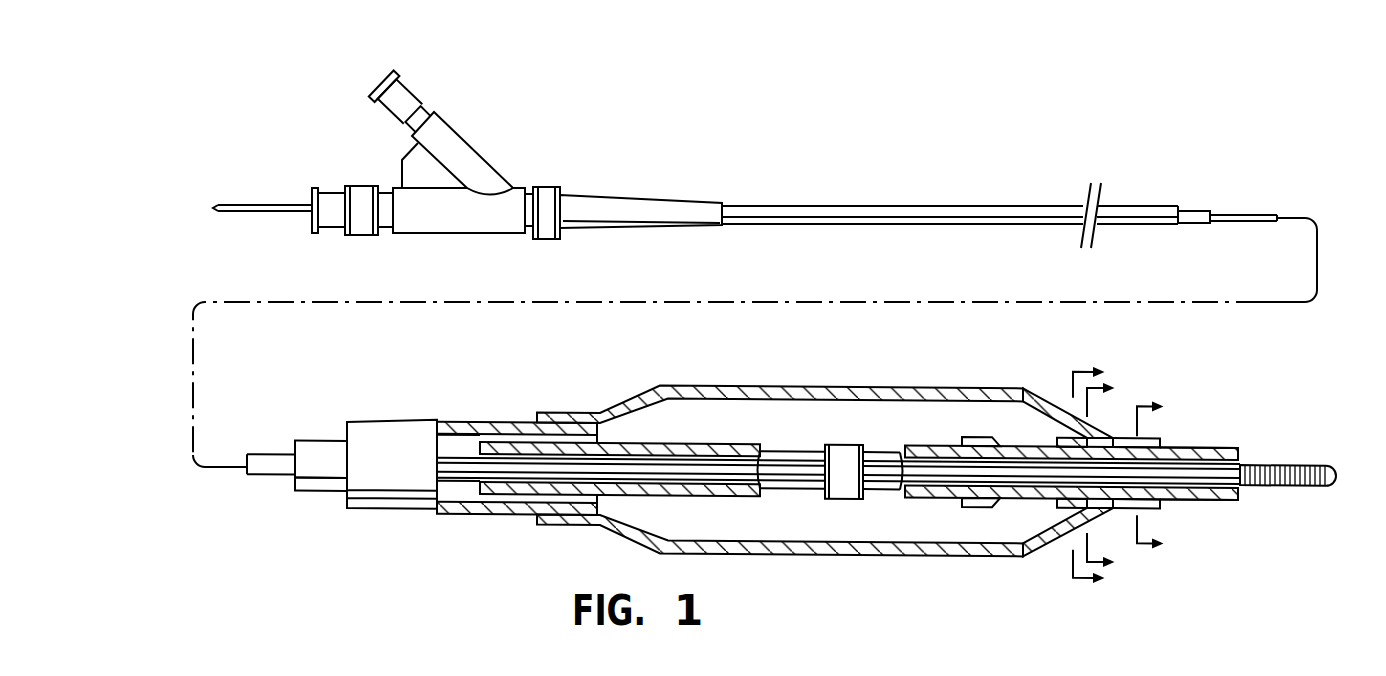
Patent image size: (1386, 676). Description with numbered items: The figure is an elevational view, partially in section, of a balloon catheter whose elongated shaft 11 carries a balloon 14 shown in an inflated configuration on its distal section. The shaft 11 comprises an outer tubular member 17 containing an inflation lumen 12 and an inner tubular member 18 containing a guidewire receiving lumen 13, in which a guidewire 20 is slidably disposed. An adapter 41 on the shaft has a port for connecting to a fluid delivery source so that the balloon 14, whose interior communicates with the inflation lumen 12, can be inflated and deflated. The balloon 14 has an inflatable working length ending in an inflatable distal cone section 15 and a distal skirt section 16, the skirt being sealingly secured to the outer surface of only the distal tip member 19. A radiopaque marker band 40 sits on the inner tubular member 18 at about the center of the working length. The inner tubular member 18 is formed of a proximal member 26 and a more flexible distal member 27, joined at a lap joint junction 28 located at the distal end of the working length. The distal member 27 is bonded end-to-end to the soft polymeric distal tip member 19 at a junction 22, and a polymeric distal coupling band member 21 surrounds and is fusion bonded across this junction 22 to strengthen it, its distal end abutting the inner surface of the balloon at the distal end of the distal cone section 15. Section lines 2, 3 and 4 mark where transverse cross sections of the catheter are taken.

The elongated shaft 11 is at (812, 206).
The inflation lumen 12 is at (472, 500).
The guidewire receiving lumen 13 is at (527, 490).
The balloon 14 is at (713, 384).
The distal cone section 15 is at (1062, 406).
The distal skirt section 16 is at (1163, 500).
The outer tubular member 17 is at (1130, 207).
The inner tubular member 18 is at (1195, 225).
The distal tip member 19 is at (1205, 442).
The guidewire 20 is at (1287, 460).
The distal coupling band member 21 is at (1060, 533).
The junction 22 is at (1057, 438).
The proximal member 26 is at (925, 442).
The distal member 27 is at (1000, 500).
The junction 28 is at (968, 434).
The radiopaque marker band 40 is at (827, 441).
The adapter 41 is at (513, 188).
The line 2- 2 is at (1087, 480).
The line 3- 3 is at (1102, 474).
The line 4- 4 is at (1157, 480).